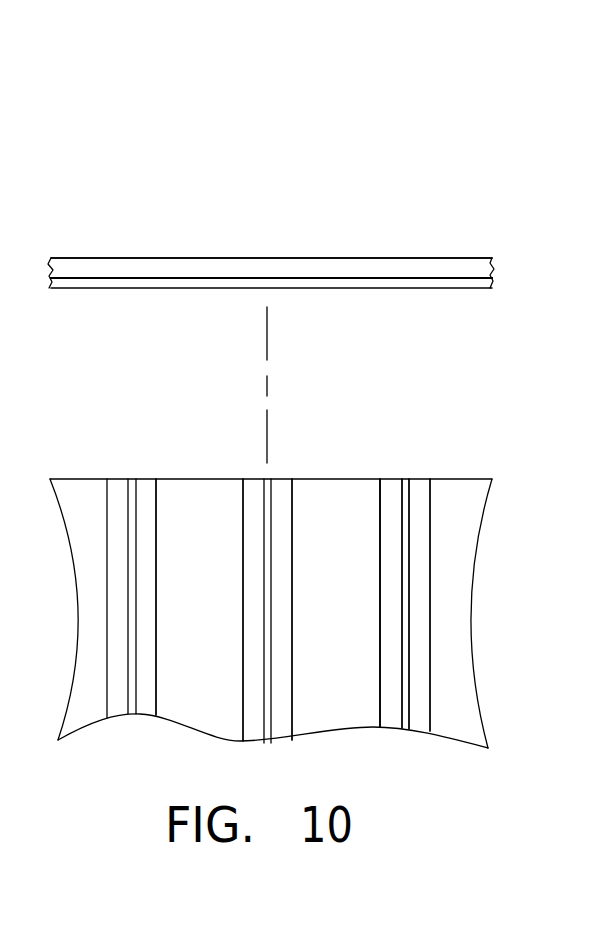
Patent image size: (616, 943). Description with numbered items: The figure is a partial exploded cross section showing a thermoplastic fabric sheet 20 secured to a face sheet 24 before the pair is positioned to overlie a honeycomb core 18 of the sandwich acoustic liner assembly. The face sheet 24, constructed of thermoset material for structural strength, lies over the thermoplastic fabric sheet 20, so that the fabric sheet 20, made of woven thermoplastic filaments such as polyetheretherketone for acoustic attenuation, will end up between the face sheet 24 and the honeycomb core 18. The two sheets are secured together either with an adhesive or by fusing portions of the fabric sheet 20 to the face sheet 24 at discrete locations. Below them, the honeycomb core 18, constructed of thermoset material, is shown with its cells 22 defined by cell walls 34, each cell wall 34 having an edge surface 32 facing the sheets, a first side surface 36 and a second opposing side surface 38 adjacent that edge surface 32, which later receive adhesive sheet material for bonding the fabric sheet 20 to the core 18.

The honeycomb core 18 is at (486, 590).
The thermoplastic fabric sheet 20 is at (486, 282).
The cell 22 is at (193, 668).
The face sheet 24 is at (490, 271).
The edge surface 32 is at (271, 479).
The cell wall 34 is at (182, 572).
The first side surface 36 is at (409, 540).
The second opposing side surface 38 is at (402, 537).